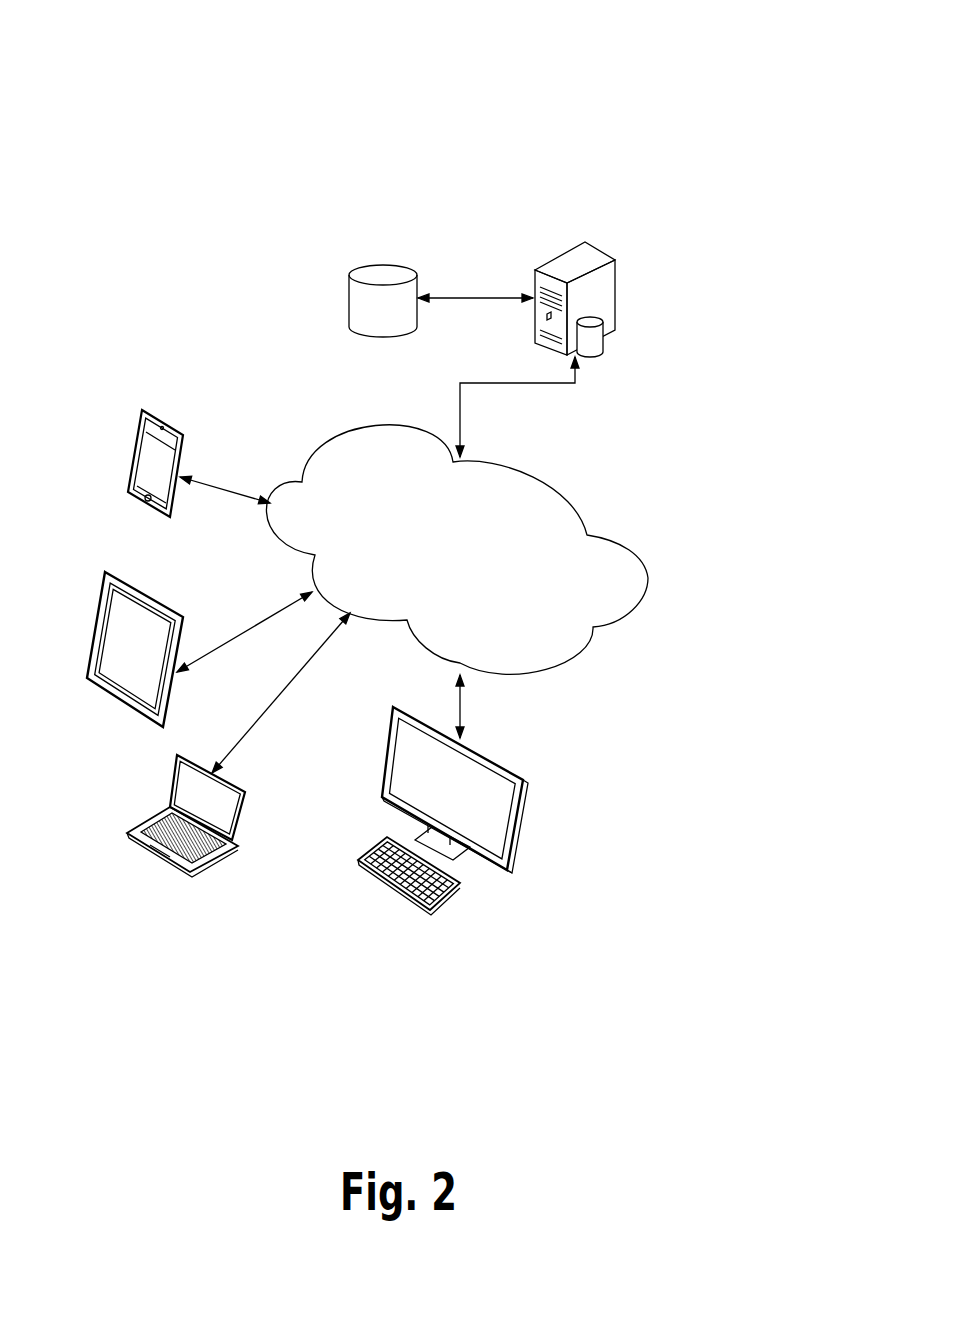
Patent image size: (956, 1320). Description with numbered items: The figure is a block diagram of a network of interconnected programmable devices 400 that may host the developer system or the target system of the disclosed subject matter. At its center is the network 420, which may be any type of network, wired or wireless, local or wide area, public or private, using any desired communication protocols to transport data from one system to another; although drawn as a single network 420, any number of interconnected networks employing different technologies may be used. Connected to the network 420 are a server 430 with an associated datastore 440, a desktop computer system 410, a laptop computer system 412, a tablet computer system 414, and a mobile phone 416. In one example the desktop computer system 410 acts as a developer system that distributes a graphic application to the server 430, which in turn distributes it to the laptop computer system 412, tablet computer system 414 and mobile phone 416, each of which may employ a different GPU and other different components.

The network of interconnected programmable devices 400 is at (438, 78).
The desktop computer system 410 is at (508, 811).
The laptop computer system 412 is at (228, 828).
The tablet computer system 414 is at (97, 680).
The mobile phone 416 is at (100, 457).
The network 420 is at (525, 550).
The server 430 is at (637, 289).
The datastore 440 is at (337, 266).